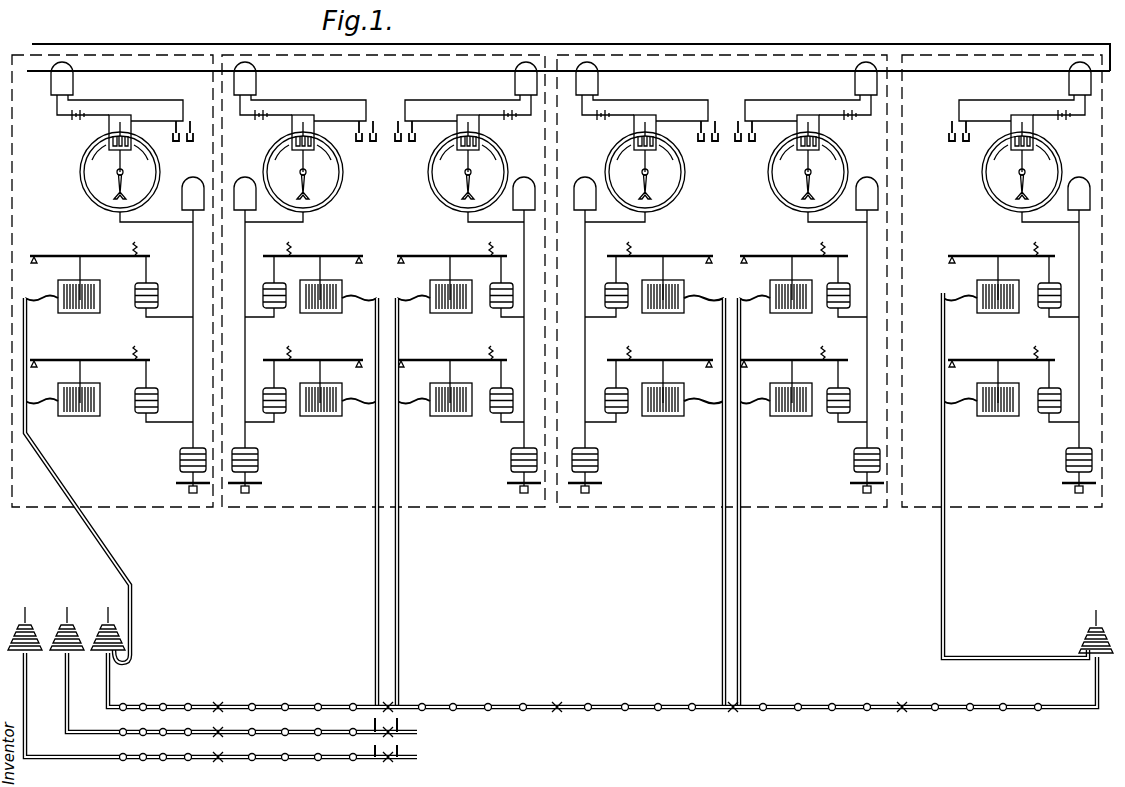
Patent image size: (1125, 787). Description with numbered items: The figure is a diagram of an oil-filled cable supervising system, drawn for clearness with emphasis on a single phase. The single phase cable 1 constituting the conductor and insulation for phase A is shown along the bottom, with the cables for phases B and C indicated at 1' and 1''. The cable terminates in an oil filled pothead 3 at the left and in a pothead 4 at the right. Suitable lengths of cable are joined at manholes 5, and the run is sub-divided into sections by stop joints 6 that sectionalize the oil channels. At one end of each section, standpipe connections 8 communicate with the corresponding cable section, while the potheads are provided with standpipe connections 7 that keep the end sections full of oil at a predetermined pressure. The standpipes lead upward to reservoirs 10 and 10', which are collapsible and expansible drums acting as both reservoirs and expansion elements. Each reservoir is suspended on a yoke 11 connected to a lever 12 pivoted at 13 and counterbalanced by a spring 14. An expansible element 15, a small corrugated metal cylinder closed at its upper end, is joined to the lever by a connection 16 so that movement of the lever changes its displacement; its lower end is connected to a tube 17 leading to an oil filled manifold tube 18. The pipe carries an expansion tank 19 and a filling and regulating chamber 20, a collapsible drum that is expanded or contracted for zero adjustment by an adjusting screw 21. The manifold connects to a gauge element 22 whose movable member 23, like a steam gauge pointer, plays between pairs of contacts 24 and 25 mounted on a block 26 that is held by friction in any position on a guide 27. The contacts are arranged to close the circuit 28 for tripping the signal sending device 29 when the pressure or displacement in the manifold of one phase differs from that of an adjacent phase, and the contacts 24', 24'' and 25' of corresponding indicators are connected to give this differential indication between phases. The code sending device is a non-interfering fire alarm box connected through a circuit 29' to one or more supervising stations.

The single phase cable 1 is at (602, 690).
The cable for phase B 1' is at (296, 698).
The cable for phase C 1'' is at (275, 709).
The oil filled pothead 3 is at (120, 640).
The pothead 4 is at (1088, 640).
The manholes 5 is at (175, 703).
The stop joints 6 is at (218, 734).
The standpipe connections 7 is at (133, 612).
The standpipe connections 8 is at (397, 630).
The reservoir 10 is at (529, 305).
The reservoir 10' is at (526, 410).
The yoke 11 is at (83, 280).
The lever 12 is at (75, 256).
The pivot 13 is at (35, 258).
The spring 14 is at (137, 248).
The expansible element 15 is at (158, 285).
The connection 16 is at (145, 272).
The tube 17 is at (170, 315).
The manifold tube 18 is at (158, 222).
The expansion tank 19 is at (243, 185).
The filling and regulating chamber 20 is at (180, 460).
The adjusting screw 21 is at (180, 488).
The gauge element 22 is at (85, 180).
The movable member 23 is at (123, 172).
The contacts 24 is at (561, 127).
The contacts 24' is at (662, 117).
The contacts 24'' is at (189, 118).
The contacts 25 is at (527, 159).
The contacts 25' is at (563, 157).
The block 26 is at (107, 160).
The guide 27 is at (140, 148).
The circuit 28 is at (145, 100).
The signal sending device 29 is at (571, 72).
The circuit 29' is at (568, 57).